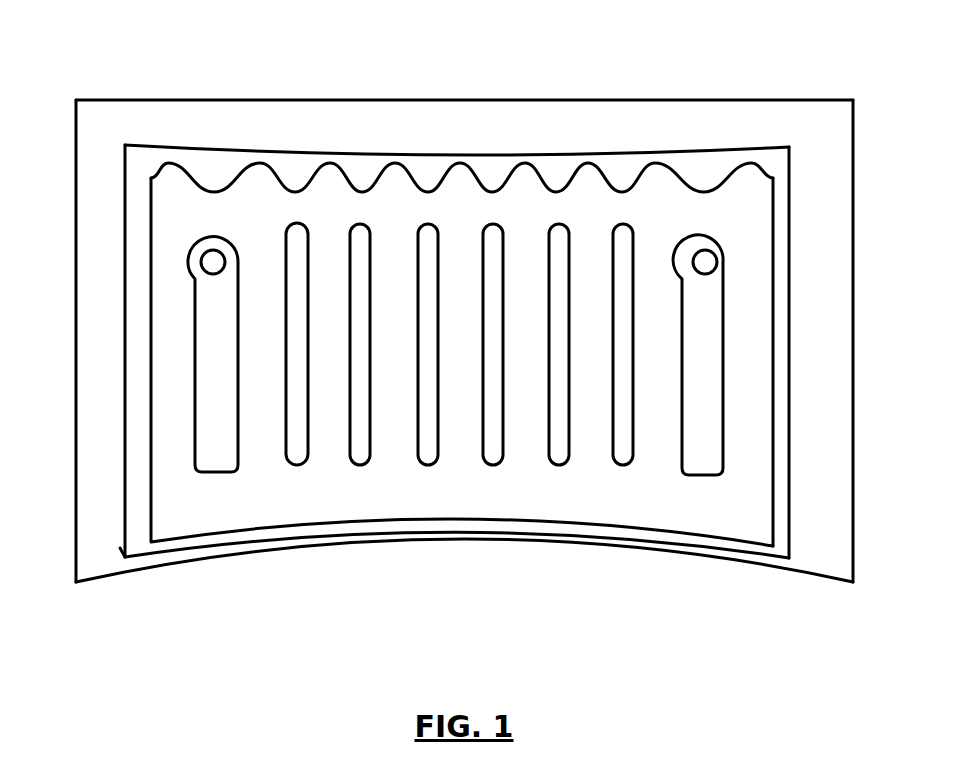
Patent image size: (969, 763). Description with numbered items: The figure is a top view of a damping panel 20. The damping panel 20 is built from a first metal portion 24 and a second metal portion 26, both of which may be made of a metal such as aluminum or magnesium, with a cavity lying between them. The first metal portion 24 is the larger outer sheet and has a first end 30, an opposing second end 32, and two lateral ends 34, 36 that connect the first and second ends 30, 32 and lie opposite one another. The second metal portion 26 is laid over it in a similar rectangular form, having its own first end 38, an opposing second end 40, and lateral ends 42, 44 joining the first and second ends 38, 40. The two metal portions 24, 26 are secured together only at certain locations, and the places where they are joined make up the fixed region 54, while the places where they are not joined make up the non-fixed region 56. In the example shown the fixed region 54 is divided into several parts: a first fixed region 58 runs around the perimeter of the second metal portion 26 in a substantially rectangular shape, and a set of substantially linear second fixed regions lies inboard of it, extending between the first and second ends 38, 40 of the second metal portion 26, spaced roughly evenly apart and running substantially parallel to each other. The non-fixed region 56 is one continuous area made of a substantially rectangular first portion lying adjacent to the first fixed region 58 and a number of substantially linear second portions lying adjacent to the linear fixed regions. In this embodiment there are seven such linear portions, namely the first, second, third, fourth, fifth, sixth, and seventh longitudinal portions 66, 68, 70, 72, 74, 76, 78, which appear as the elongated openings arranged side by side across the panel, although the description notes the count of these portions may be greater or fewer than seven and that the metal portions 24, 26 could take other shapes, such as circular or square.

The damping panel 20 is at (862, 80).
The first metal portion 24 is at (76, 137).
The second metal portion 26 is at (120, 548).
The first end of the first metal portion 30 is at (432, 99).
The second end of the first metal portion 32 is at (435, 545).
The lateral end of the first metal portion 34 is at (853, 318).
The lateral end of the first metal portion 36 is at (76, 310).
The first end of the second metal portion 38 is at (402, 155).
The second end of the second metal portion 40 is at (293, 538).
The lateral end of the second metal portion 42 is at (795, 387).
The lateral end of the second metal portion 44 is at (125, 342).
The fixed region 54 is at (710, 172).
The non-fixed region 56 is at (745, 232).
The first fixed region 58 is at (780, 377).
The first longitudinal portion 66 is at (263, 420).
The second longitudinal portion 68 is at (333, 283).
The third longitudinal portion 70 is at (388, 395).
The fourth longitudinal portion 72 is at (462, 293).
The fifth longitudinal portion 74 is at (520, 380).
The sixth longitudinal portion 76 is at (590, 292).
The seventh longitudinal portion 78 is at (660, 380).